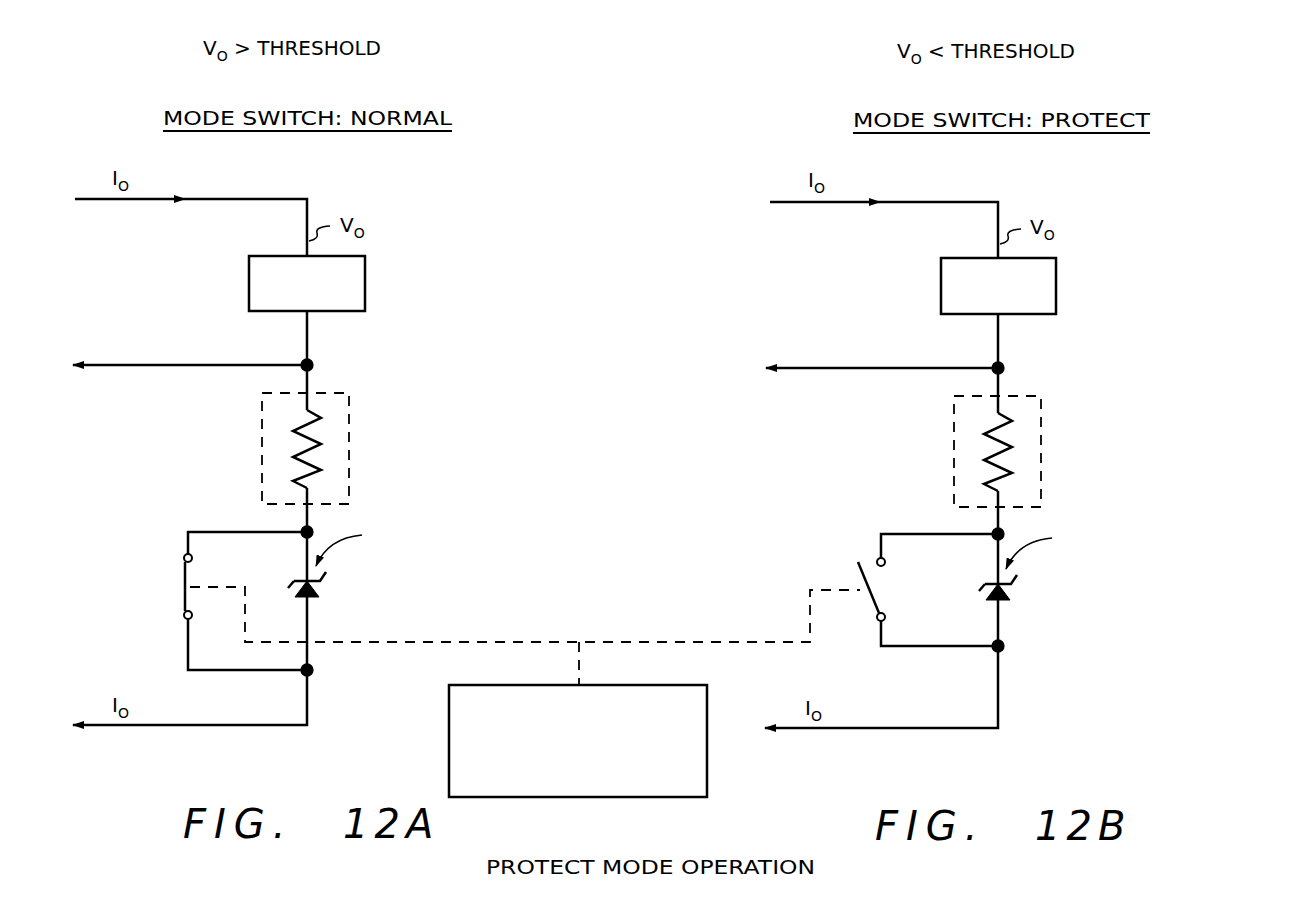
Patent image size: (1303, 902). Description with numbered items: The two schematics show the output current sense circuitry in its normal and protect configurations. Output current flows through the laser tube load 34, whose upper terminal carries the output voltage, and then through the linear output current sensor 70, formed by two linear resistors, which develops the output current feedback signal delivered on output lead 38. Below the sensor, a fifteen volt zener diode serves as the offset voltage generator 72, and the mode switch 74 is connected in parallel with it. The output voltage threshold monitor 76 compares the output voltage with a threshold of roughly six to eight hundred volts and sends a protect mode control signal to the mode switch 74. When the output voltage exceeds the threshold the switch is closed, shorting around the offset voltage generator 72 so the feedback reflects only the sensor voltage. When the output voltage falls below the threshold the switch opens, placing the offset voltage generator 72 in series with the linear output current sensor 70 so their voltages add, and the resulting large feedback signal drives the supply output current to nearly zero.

In FIG. 12A, the load 34 is at (365, 296).
In FIG. 12B, the load 34 is at (1056, 298).
In FIG. 12A, the output lead 38 is at (130, 368).
In FIG. 12B, the output lead 38 is at (822, 371).
In FIG. 12A, the linear output current sensor 70 is at (340, 393).
In FIG. 12B, the linear output current sensor 70 is at (1031, 396).
In FIG. 12A, the offset voltage generator 72 is at (312, 599).
In FIG. 12B, the offset voltage generator 72 is at (1003, 602).
In FIG. 12A, the mode switch 74 is at (183, 564).
In FIG. 12B, the mode switch 74 is at (860, 567).
In FIG. 12A, the output voltage threshold monitor 76 is at (449, 750).